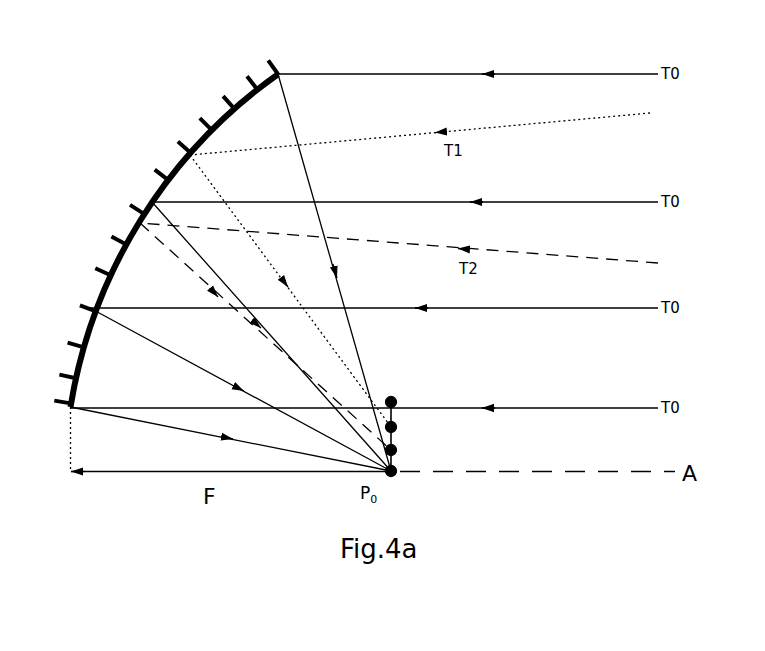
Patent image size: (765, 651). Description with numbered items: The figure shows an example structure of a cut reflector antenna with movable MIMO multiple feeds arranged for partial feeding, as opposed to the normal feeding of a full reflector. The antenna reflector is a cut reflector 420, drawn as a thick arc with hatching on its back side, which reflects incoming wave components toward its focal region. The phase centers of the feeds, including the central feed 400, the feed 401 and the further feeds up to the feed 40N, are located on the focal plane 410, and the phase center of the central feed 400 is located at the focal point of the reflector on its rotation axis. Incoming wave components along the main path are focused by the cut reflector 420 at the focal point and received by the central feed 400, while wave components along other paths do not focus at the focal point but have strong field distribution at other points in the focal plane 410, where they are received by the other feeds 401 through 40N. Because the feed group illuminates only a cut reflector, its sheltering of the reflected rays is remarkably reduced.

The cut reflector 420 is at (122, 233).
The central feed 400 is at (395, 477).
The feed 401 is at (396, 449).
The focal plane 410 is at (396, 424).
The feed 40N is at (394, 400).